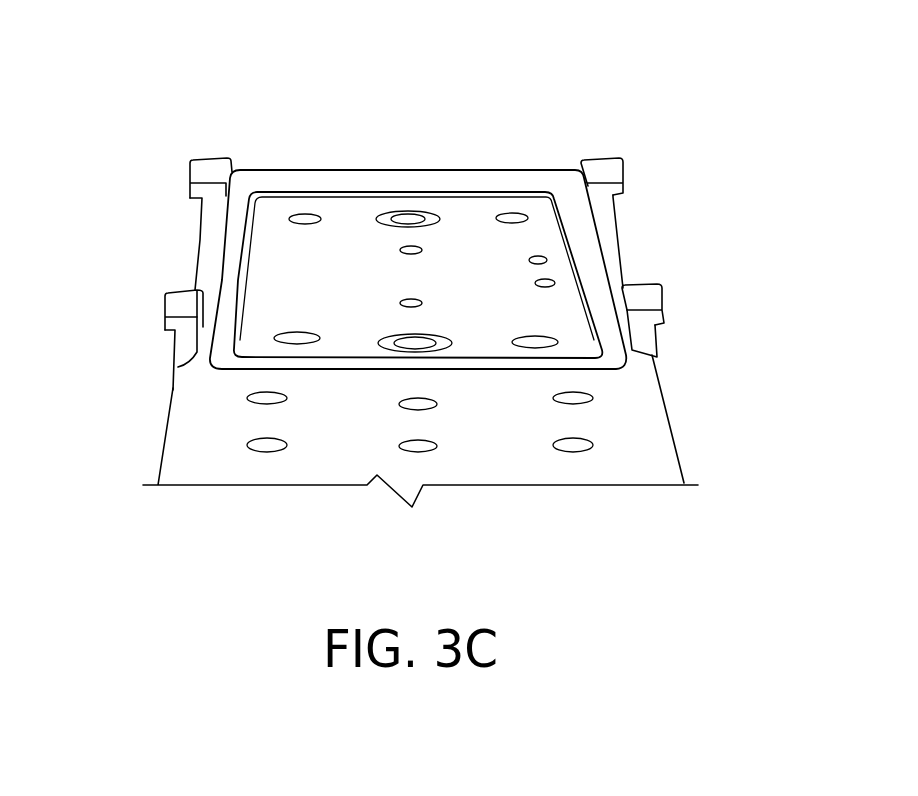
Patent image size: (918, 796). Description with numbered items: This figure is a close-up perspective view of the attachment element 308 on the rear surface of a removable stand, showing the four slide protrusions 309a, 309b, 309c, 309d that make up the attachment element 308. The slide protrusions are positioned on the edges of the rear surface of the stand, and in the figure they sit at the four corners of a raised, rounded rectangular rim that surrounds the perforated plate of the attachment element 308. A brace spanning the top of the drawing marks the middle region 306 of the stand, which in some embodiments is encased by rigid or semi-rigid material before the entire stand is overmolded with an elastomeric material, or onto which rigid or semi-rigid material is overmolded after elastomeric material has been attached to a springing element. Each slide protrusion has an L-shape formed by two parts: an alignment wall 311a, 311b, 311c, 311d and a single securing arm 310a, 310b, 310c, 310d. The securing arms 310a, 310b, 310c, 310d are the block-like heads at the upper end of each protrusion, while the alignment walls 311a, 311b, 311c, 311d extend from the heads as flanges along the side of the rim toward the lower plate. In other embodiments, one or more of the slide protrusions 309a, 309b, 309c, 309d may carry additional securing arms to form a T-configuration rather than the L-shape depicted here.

The middle region 306 is at (623, 98).
The attachment element 308 is at (353, 243).
The slide protrusion 309a is at (170, 184).
The slide protrusion 309b is at (137, 319).
The slide protrusion 309c is at (695, 310).
The slide protrusion 309d is at (640, 167).
The securing arm 310a is at (208, 170).
The securing arm 310b is at (178, 303).
The securing arm 310c is at (645, 297).
The securing arm 310d is at (613, 160).
The alignment wall 311a is at (200, 203).
The alignment wall 311b is at (185, 350).
The alignment wall 311c is at (643, 342).
The alignment wall 311d is at (610, 207).